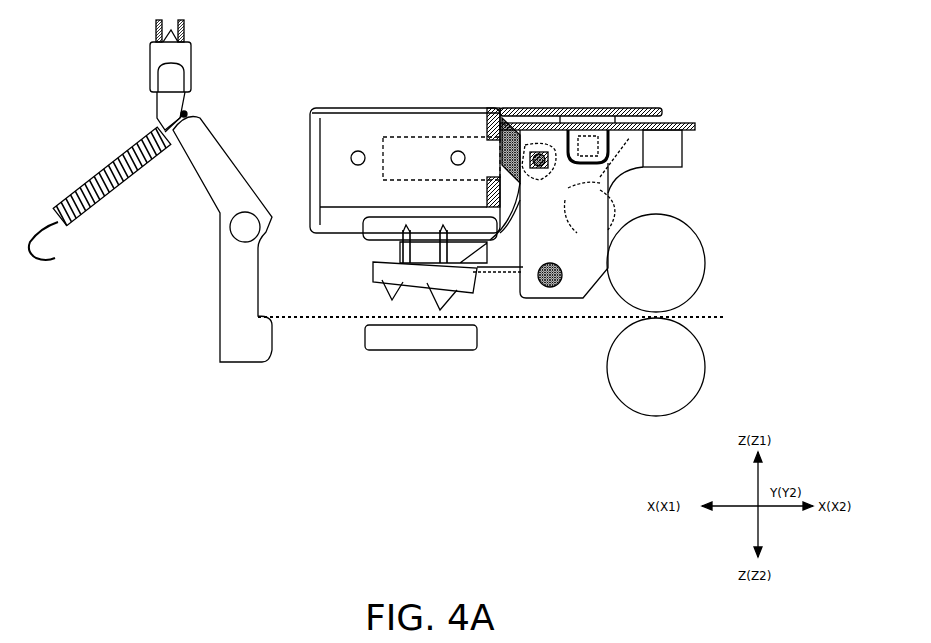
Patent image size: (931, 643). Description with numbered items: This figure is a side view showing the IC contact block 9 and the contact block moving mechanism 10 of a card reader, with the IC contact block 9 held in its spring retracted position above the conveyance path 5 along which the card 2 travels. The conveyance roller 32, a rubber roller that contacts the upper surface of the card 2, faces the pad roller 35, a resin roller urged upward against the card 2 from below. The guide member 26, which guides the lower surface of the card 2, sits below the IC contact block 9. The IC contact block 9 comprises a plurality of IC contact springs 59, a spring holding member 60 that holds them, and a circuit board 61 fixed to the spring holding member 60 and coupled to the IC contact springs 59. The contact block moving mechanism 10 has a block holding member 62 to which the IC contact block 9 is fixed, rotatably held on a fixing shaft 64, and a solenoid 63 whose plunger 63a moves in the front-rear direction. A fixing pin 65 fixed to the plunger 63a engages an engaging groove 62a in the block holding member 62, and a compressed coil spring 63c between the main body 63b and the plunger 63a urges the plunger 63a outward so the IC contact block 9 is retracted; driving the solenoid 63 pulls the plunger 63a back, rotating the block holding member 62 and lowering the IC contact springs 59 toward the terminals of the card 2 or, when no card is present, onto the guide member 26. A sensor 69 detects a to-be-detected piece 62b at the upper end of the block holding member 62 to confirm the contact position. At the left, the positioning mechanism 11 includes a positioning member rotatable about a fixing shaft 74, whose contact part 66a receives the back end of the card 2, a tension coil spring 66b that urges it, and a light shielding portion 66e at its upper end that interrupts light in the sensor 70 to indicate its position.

The card 2 is at (710, 310).
The conveyance path 5 is at (699, 315).
The IC contact block 9 is at (485, 303).
The contact block moving mechanism 10 is at (487, 217).
The positioning mechanism 11 is at (150, 191).
The guide member 26 is at (398, 362).
The conveyance roller 32 is at (707, 252).
The pad roller 35 is at (712, 337).
The IC contact spring 59 is at (460, 316).
The spring holding member 60 is at (395, 240).
The circuit board 61 is at (387, 225).
The block holding member 62 is at (620, 197).
The engaging groove 62a is at (537, 103).
The to-be-detected piece 62b is at (650, 100).
The solenoid 63 is at (436, 121).
The plunger 63a is at (430, 133).
The main body 63b is at (493, 157).
The compressed coil spring 63c is at (510, 117).
The fixing shaft 64 is at (553, 288).
The fixing pin 65 is at (550, 140).
The contact part 66a is at (220, 310).
The tension coil spring 66b is at (63, 207).
The light shielding portion 66e is at (187, 104).
The sensor 69 is at (608, 117).
The sensor 70 is at (148, 70).
The fixing shaft 74 is at (220, 242).